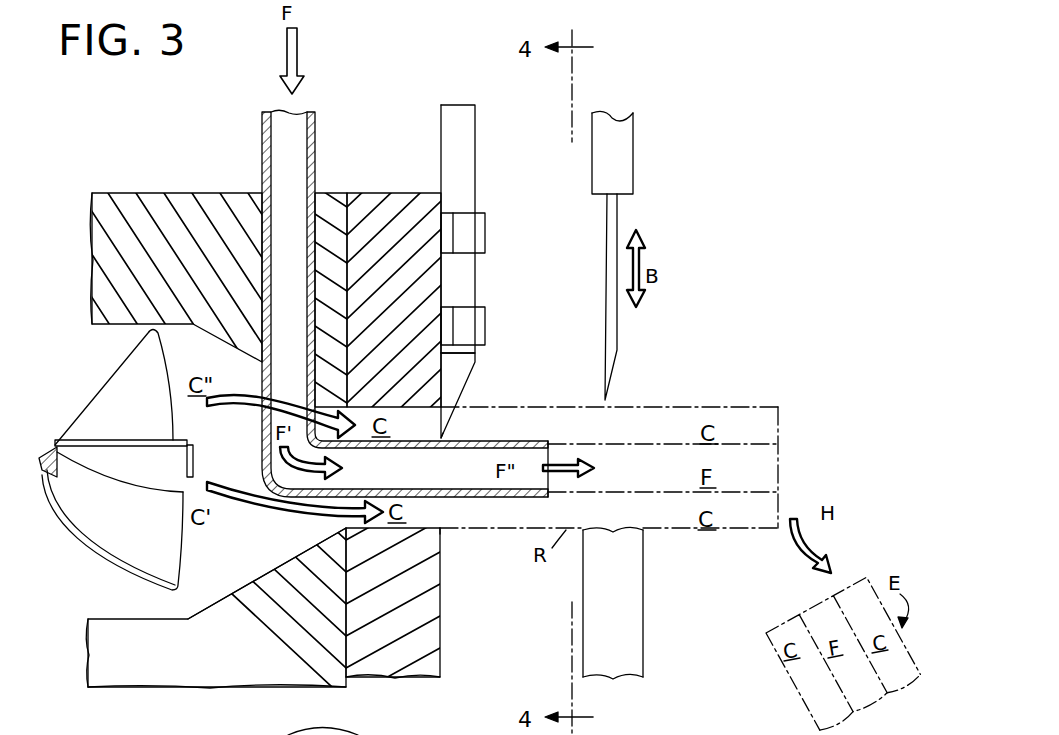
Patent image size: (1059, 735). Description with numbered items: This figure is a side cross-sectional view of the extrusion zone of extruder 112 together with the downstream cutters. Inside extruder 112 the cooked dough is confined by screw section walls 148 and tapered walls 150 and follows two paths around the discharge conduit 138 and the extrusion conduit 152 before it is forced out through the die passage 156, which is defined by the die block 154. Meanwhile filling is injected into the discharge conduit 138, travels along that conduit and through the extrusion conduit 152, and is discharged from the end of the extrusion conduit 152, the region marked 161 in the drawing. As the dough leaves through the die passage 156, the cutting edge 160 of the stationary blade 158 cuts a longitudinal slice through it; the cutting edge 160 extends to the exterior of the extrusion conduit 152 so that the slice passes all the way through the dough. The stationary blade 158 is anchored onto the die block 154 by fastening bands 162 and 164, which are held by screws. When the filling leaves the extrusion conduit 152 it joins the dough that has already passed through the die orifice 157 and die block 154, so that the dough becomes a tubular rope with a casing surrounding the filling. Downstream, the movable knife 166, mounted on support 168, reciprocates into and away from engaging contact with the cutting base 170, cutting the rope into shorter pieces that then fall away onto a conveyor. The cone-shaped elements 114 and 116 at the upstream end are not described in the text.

The extruder 112 is at (150, 193).
The lower nozzle cone 114 is at (115, 477).
The upper nozzle cone 116 is at (112, 393).
The discharge conduit 138 is at (316, 152).
The screw section walls 148 is at (137, 619).
The tapered walls 150 is at (217, 603).
The extrusion conduit 152 is at (580, 419).
The die block 154 is at (408, 192).
The die passage 156 is at (410, 417).
The die orifice 157 is at (444, 532).
The stationary blade 158 is at (470, 371).
The cutting edge 160 is at (443, 437).
The tube outlet end 161 is at (537, 438).
The fastening band 162 is at (485, 234).
The fastening band 164 is at (485, 321).
The movable knife 166 is at (618, 351).
The support 168 is at (633, 152).
The cutting base 170 is at (643, 610).